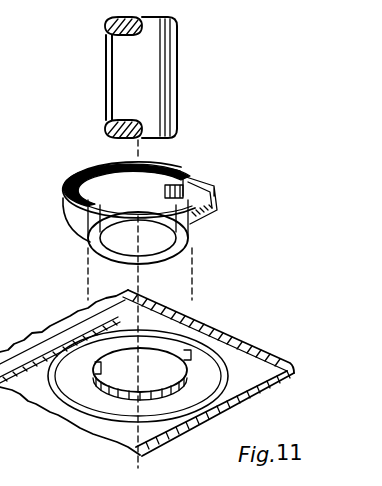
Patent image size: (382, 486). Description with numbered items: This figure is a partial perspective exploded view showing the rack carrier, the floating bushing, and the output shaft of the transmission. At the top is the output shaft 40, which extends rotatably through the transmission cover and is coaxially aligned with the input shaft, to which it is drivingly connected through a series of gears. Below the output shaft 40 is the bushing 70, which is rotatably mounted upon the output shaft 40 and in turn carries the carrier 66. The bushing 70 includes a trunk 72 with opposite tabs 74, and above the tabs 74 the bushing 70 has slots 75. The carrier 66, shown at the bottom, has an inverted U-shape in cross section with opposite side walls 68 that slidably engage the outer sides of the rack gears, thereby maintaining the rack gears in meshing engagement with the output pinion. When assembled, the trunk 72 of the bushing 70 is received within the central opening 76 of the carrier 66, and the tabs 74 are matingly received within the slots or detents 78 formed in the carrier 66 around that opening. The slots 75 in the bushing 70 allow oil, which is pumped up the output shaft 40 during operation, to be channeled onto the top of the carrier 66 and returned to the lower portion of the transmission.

The output shaft 40 is at (148, 83).
The carrier 66 is at (155, 387).
The side walls 68 is at (58, 485).
The bushing 70 is at (149, 206).
The trunk 72 is at (185, 242).
The tabs 74 is at (192, 222).
The slots 75 is at (187, 176).
The central opening 76 is at (155, 360).
The slots or detents 78 is at (250, 340).